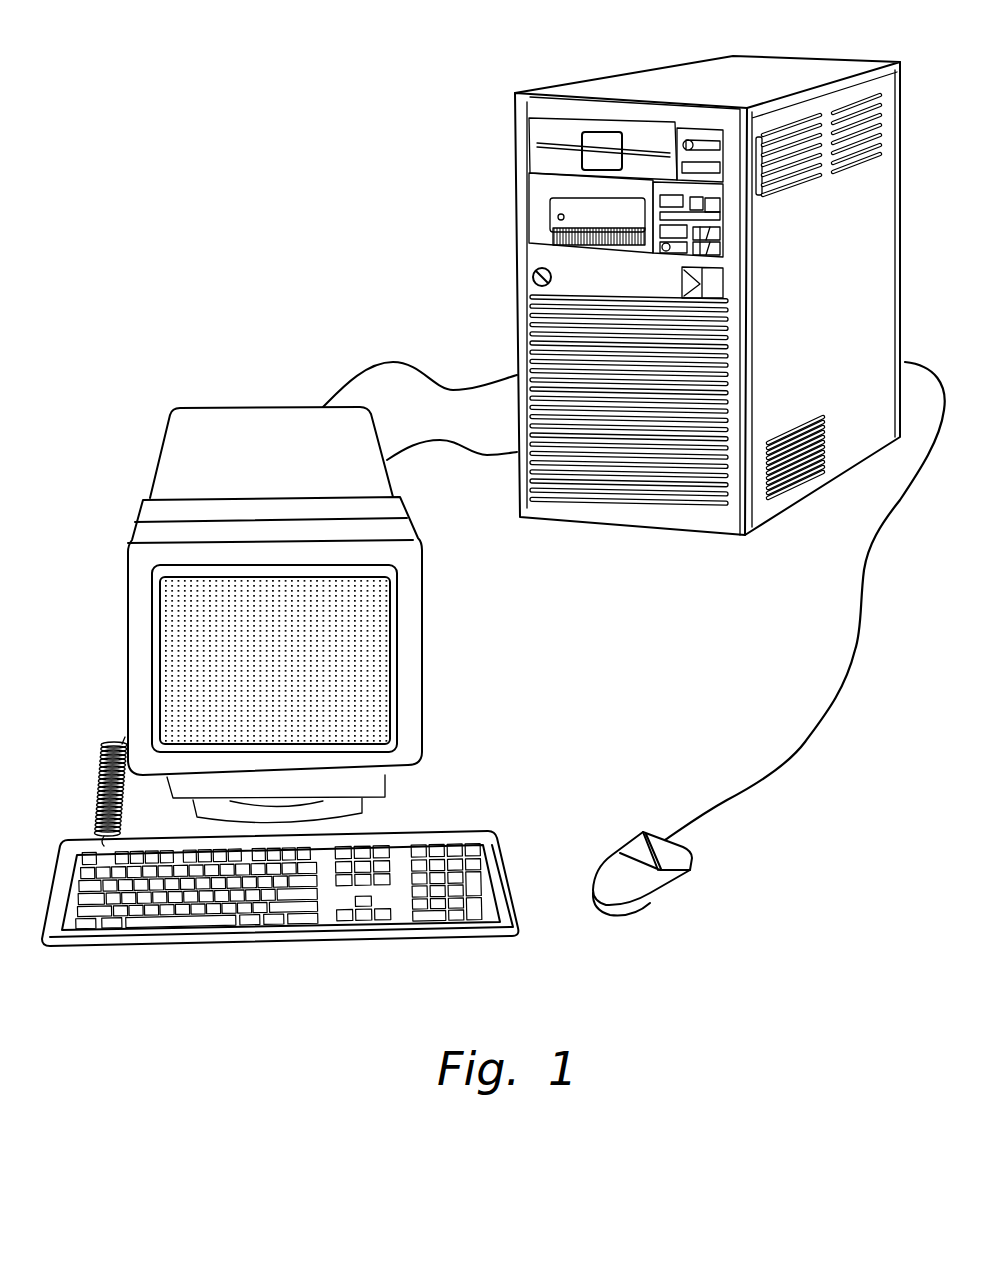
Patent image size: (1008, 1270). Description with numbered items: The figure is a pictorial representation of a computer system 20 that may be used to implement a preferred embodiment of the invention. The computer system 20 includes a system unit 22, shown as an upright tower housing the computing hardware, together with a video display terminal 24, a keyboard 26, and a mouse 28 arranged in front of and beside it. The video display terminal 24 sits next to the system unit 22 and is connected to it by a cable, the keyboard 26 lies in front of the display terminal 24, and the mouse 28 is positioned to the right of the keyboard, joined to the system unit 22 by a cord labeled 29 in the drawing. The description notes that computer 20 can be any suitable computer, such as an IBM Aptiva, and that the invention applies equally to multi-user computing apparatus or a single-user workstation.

The computer system 20 is at (297, 272).
The system unit 22 is at (535, 260).
The video display terminal 24 is at (286, 432).
The keyboard 26 is at (310, 935).
The mouse 28 is at (650, 893).
The mouse cable 29 is at (807, 743).